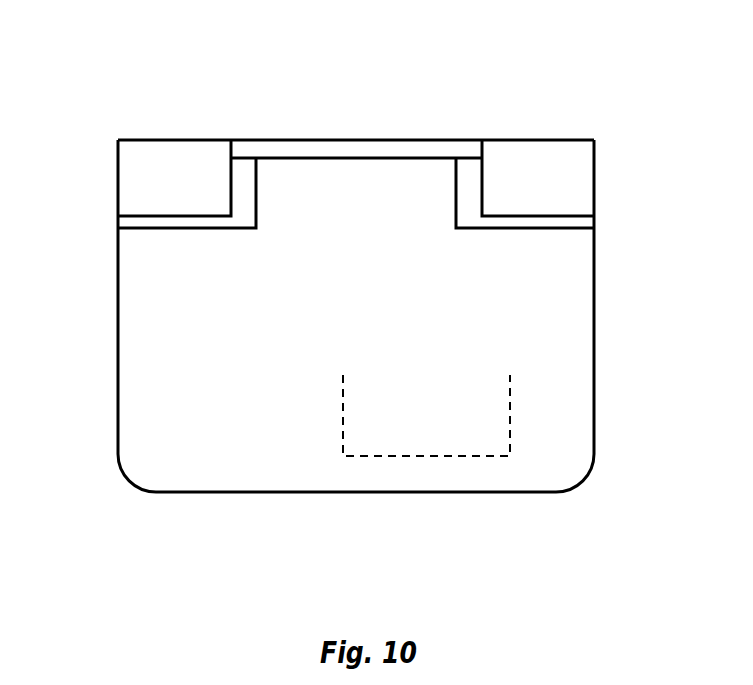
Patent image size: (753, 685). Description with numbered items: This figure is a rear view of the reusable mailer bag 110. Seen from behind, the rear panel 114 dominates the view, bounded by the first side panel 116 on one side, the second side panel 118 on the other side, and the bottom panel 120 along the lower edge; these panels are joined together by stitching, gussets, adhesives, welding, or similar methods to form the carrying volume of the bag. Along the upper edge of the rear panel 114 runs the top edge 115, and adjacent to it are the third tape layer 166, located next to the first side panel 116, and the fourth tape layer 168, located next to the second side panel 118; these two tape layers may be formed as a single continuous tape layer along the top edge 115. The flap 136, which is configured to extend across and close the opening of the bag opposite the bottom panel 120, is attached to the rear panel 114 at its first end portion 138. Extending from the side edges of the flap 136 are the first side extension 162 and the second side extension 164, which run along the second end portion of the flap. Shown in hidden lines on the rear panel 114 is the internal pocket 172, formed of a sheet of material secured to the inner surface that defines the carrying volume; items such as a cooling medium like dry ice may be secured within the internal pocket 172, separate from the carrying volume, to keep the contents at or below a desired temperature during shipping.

The mailer bag 110 is at (672, 62).
The rear panel 114 is at (246, 369).
The top edge 115 is at (292, 140).
The first side panel 116 is at (118, 425).
The second side panel 118 is at (595, 403).
The bottom panel 120 is at (408, 493).
The flap 136 is at (393, 119).
The first end portion 138 is at (424, 150).
The first side extension 162 is at (132, 172).
The second side extension 164 is at (585, 175).
The third tape layer 166 is at (118, 222).
The fourth tape layer 168 is at (585, 220).
The internal pocket 172 is at (466, 430).